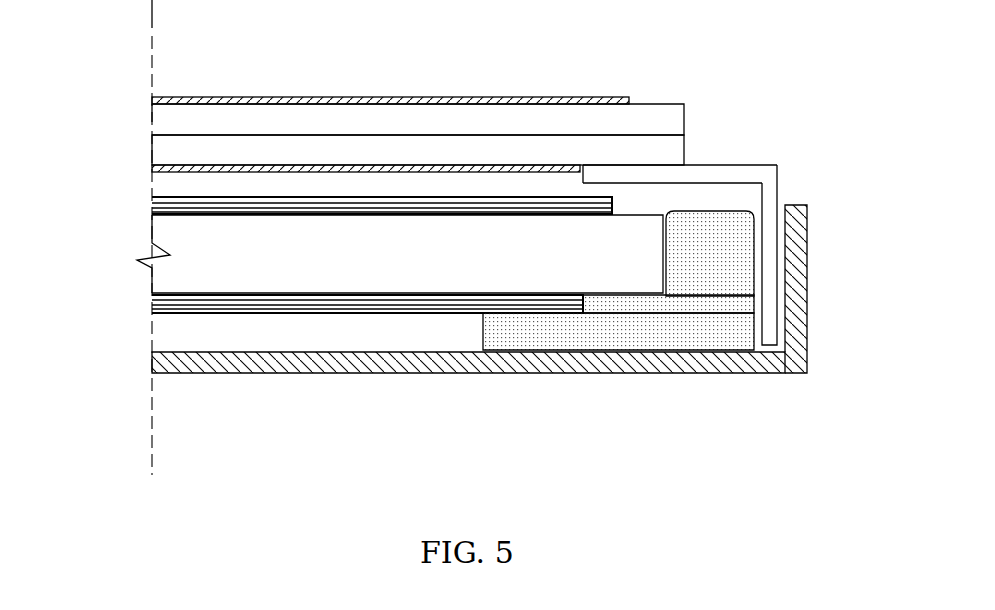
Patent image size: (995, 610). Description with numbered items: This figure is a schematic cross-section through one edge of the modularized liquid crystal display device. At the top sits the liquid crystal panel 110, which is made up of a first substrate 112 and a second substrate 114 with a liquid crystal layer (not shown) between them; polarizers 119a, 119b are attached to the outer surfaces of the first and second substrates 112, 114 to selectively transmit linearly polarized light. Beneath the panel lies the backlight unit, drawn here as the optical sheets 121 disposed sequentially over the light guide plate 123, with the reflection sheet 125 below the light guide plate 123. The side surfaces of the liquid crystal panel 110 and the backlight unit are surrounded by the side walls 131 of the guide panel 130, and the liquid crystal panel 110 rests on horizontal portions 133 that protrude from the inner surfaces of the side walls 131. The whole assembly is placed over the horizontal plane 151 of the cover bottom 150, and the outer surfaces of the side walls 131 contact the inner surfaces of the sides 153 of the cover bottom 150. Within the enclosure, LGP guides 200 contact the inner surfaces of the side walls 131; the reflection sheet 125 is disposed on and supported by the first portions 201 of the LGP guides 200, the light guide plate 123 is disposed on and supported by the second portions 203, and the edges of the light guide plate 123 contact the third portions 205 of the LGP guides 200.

The liquid crystal panel 110 is at (355, 122).
The first substrate 112 is at (157, 149).
The second substrate 114 is at (160, 123).
The polarizer 119a is at (153, 170).
The polarizer 119b is at (152, 101).
The optical sheets 121 is at (152, 203).
The light guide plate 123 is at (158, 237).
The reflection sheet 125 is at (157, 307).
The guide panel 130 is at (704, 208).
The side walls 131 is at (770, 212).
The horizontal portions 133 is at (722, 172).
The cover bottom 150 is at (497, 346).
The horizontal plane 151 is at (762, 375).
The sides 153 is at (813, 337).
The LGP guides 200 is at (699, 280).
The first portions 201 is at (745, 333).
The second portions 203 is at (745, 307).
The third portions 205 is at (737, 277).